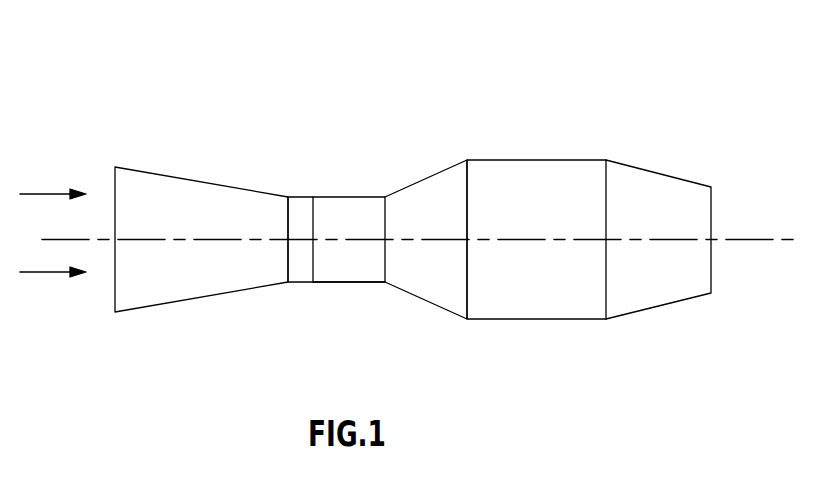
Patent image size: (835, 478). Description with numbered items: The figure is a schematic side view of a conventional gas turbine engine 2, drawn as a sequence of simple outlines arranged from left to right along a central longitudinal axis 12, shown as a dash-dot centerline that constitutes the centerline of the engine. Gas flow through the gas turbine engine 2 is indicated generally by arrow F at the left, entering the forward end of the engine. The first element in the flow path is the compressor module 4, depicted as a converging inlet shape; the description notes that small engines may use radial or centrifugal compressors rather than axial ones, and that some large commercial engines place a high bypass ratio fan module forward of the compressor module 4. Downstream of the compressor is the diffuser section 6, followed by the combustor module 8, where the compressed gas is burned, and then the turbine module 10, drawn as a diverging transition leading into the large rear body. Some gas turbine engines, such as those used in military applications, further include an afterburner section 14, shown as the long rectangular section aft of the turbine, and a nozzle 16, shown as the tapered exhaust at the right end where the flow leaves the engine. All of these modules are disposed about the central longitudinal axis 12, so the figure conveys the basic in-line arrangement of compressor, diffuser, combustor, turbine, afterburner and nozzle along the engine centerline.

The gas turbine engine 2 is at (569, 59).
The compressor module 4 is at (142, 172).
The diffuser section 6 is at (302, 197).
The combustor module 8 is at (367, 282).
The turbine module 10 is at (433, 303).
The central longitudinal axis 12 is at (770, 239).
The afterburner section 14 is at (520, 160).
The nozzle 16 is at (642, 169).
The arrow indicating gas flow F is at (40, 194).